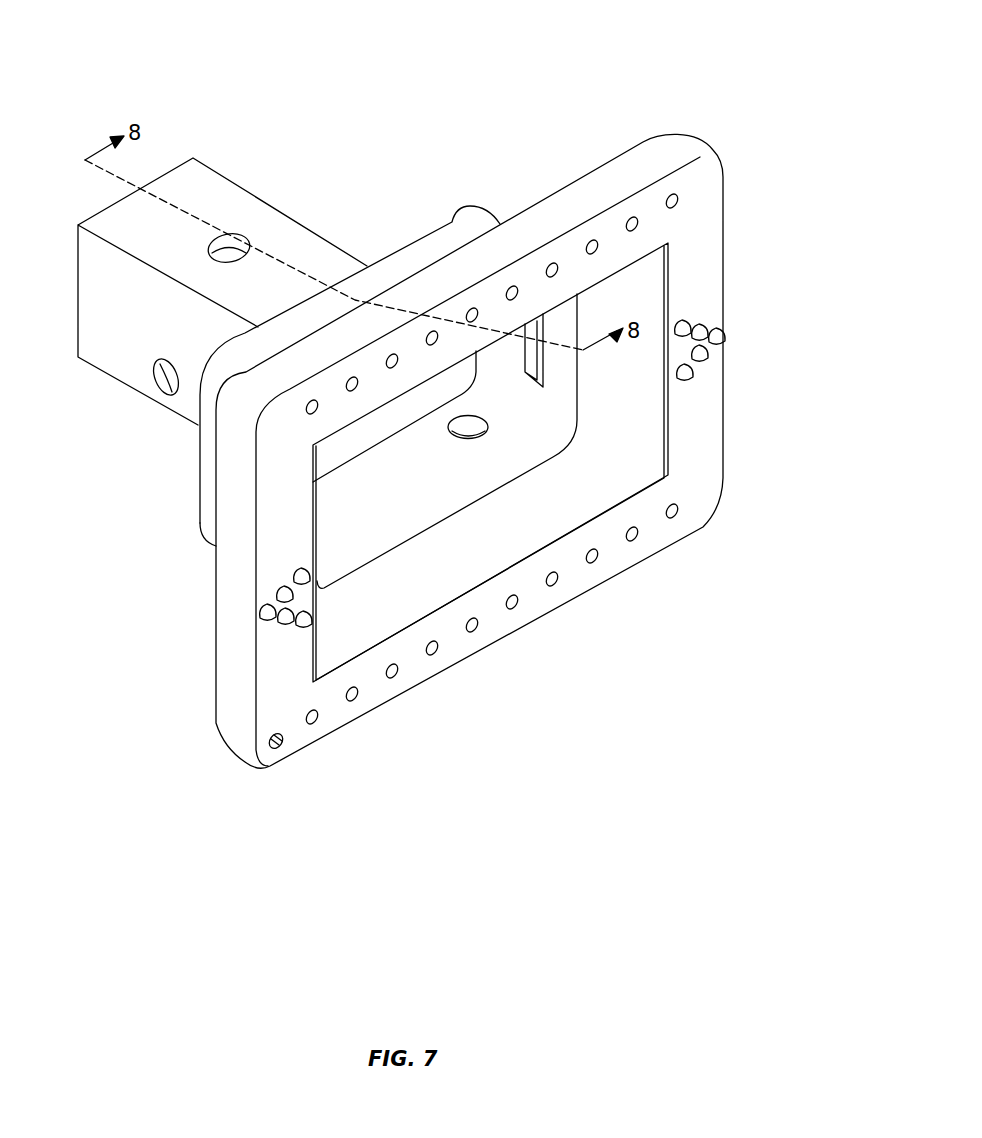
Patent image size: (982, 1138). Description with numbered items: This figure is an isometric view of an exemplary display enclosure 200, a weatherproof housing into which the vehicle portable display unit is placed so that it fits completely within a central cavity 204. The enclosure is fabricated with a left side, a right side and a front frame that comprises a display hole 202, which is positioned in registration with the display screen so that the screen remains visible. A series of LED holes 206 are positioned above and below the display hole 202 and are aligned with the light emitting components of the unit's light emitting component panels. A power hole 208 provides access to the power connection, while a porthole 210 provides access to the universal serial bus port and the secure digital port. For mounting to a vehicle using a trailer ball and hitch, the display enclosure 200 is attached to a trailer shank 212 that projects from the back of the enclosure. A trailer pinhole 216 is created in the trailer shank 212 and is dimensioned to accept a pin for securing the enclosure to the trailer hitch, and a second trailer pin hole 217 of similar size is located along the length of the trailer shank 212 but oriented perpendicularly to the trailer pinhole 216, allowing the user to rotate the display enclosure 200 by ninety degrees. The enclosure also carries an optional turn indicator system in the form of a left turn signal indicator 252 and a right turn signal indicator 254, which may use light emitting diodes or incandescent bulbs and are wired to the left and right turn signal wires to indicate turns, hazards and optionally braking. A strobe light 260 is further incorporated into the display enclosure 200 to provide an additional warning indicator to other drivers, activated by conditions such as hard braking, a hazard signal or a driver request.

The display enclosure 200 is at (233, 530).
The display hole 202 is at (664, 445).
The central cavity 204 is at (418, 485).
The LED holes 206 is at (680, 201).
The power hole 208 is at (470, 436).
The porthole 210 is at (541, 353).
The trailer shank 212 is at (312, 228).
The trailer pinhole 216 is at (148, 380).
The second trailer pin hole 217 is at (228, 235).
The left turn signal indicator 252 is at (262, 618).
The right turn signal indicator 254 is at (727, 340).
The strobe light 260 is at (282, 748).